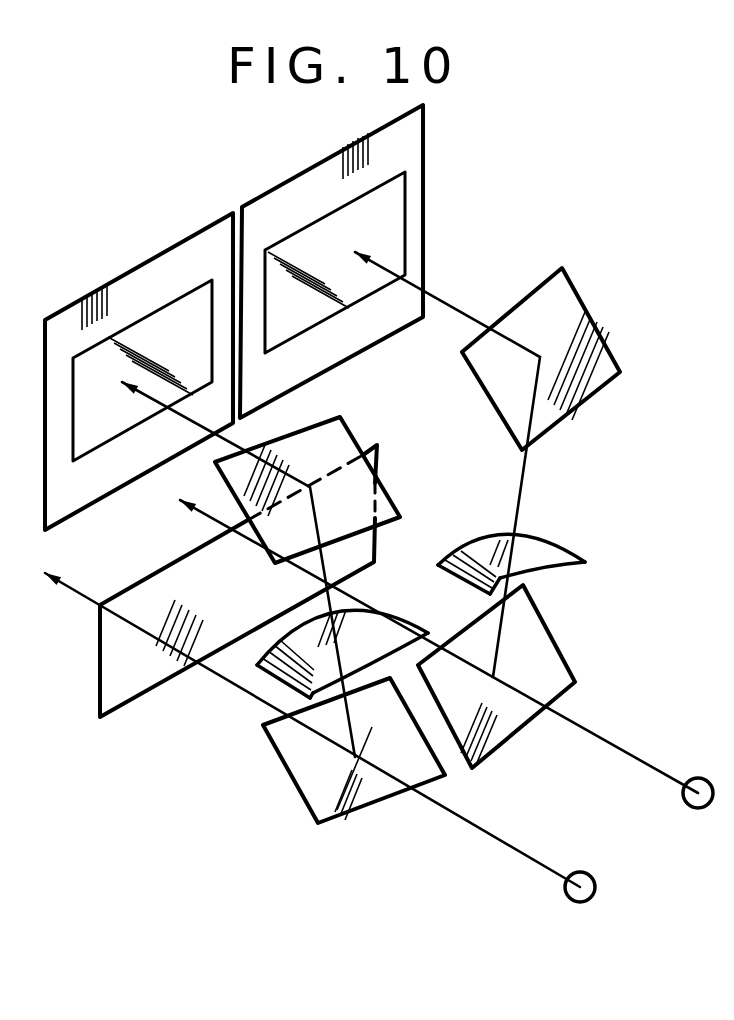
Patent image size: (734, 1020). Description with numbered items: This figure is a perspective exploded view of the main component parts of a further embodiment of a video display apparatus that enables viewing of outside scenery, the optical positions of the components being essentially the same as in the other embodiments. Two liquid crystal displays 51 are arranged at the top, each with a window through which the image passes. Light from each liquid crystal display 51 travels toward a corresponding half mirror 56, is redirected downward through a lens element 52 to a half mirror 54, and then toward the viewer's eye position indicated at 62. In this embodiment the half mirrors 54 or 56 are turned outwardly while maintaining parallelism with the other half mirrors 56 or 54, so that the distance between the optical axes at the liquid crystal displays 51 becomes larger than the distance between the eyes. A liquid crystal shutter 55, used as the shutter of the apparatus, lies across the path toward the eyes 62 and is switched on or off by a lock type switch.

The liquid crystal display 51 is at (155, 272).
The cylindrical lens 52 is at (542, 543).
The half mirror 54 is at (558, 662).
The liquid crystal shutter 55 is at (132, 680).
The half mirror 56 is at (563, 297).
The light source 62 is at (683, 805).